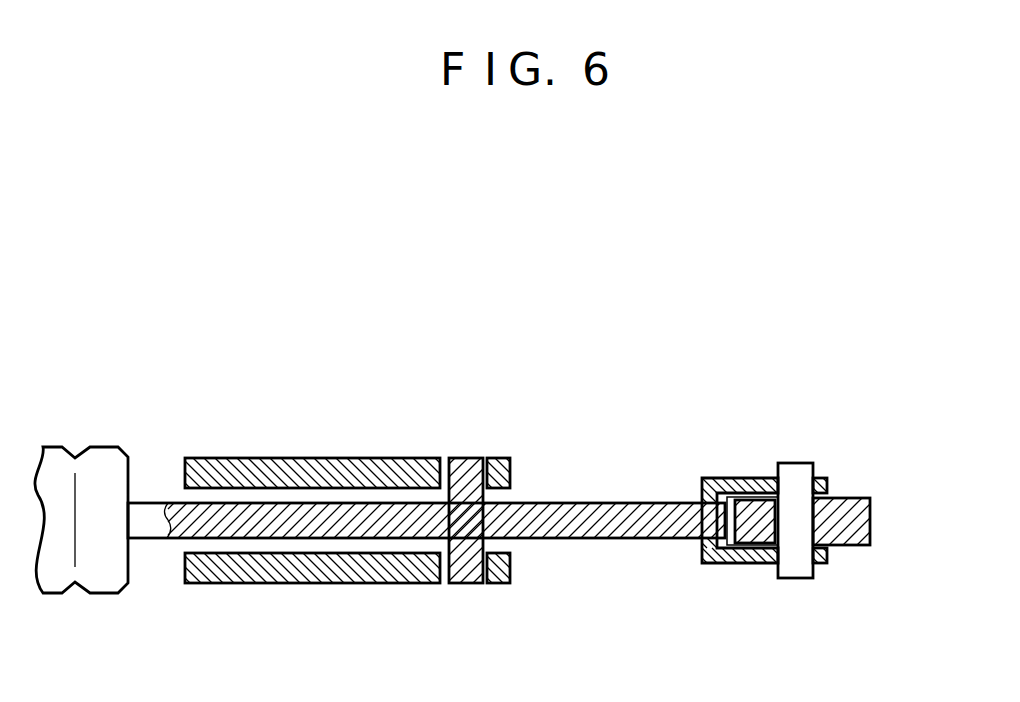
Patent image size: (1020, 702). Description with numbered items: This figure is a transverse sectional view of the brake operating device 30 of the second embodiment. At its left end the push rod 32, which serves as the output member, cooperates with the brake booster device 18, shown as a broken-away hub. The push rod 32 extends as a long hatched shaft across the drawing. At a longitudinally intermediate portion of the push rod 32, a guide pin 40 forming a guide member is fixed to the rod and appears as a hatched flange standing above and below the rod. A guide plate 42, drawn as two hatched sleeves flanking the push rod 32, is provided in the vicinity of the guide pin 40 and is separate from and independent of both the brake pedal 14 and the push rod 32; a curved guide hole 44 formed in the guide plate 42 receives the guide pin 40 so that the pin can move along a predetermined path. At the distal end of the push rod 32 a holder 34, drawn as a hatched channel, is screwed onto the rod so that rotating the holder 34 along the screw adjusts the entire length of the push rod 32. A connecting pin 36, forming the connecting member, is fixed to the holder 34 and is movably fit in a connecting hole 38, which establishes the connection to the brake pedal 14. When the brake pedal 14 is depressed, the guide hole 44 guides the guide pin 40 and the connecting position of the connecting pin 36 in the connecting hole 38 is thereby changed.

The brake pedal 14 is at (870, 522).
The brake booster device 18 is at (75, 434).
The brake operating device 30 is at (503, 395).
The push rod 32 is at (313, 503).
The holder 34 is at (727, 477).
The connecting pin 36 is at (798, 463).
The connecting hole 38 is at (812, 522).
The guide pin 40 is at (467, 458).
The guide plate 42 is at (345, 583).
The guide hole 44 is at (463, 575).